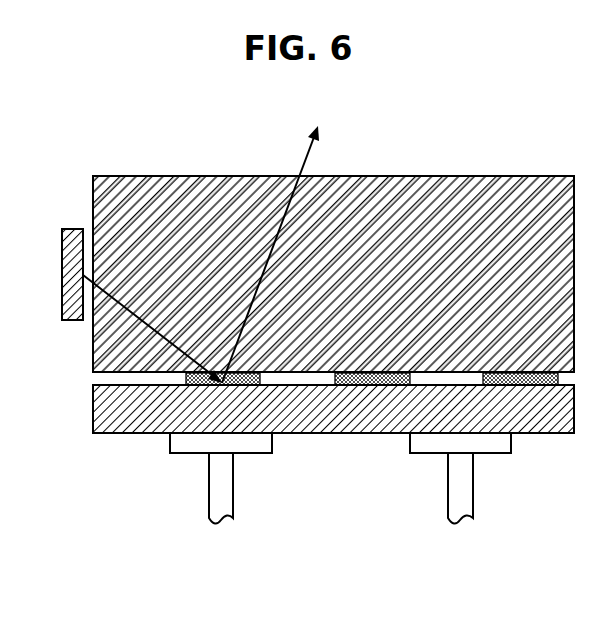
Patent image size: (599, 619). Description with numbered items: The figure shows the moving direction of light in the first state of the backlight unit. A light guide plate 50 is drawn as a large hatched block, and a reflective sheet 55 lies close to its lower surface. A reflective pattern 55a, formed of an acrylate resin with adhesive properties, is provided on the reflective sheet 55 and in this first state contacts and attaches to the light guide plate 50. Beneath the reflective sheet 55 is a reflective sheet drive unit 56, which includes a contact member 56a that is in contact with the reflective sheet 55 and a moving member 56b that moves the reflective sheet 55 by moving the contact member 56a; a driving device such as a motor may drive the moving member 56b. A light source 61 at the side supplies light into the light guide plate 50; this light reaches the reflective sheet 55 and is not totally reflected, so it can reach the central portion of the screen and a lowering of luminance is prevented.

The light guide plate 50 is at (428, 183).
The reflective sheet 55 is at (333, 420).
The reflective pattern 55a is at (184, 380).
The reflective sheet drive unit 56 is at (340, 514).
The contact member 56a is at (258, 446).
The moving member 56b is at (230, 508).
The light source 61 is at (62, 275).